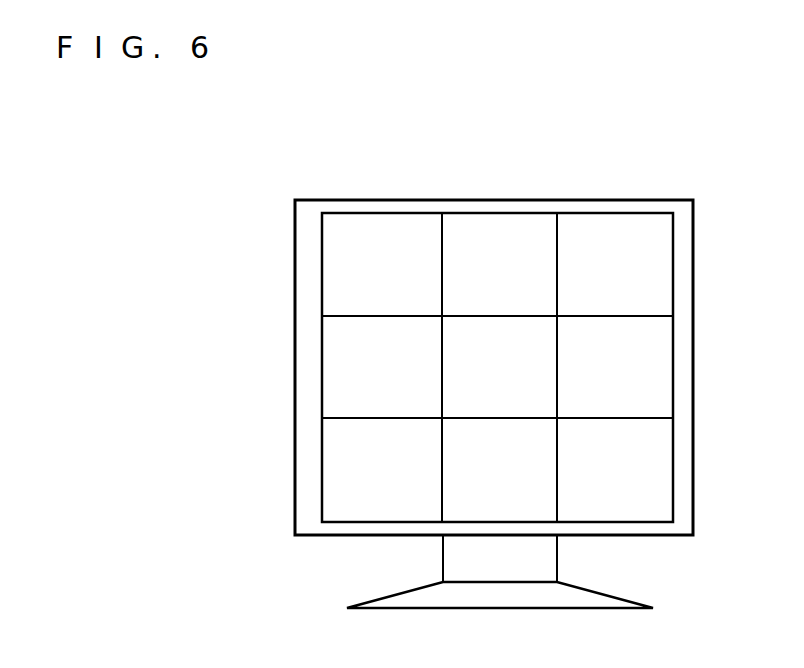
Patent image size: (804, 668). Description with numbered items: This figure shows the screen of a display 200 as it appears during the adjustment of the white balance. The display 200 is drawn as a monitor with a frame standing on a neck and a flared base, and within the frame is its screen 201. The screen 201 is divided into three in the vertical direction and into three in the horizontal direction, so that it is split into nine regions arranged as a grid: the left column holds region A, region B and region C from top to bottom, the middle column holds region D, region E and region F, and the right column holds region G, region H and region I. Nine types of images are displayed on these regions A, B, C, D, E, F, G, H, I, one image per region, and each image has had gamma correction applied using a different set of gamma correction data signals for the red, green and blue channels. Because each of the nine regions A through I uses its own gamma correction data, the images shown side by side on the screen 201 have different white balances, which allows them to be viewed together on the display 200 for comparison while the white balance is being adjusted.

The display 200 is at (605, 200).
The screen 201 is at (497, 320).
The region A is at (382, 264).
The region B is at (382, 367).
The region C is at (382, 470).
The region D is at (499, 264).
The region E is at (499, 367).
The region F is at (499, 470).
The region G is at (615, 264).
The region H is at (615, 367).
The region I is at (615, 470).